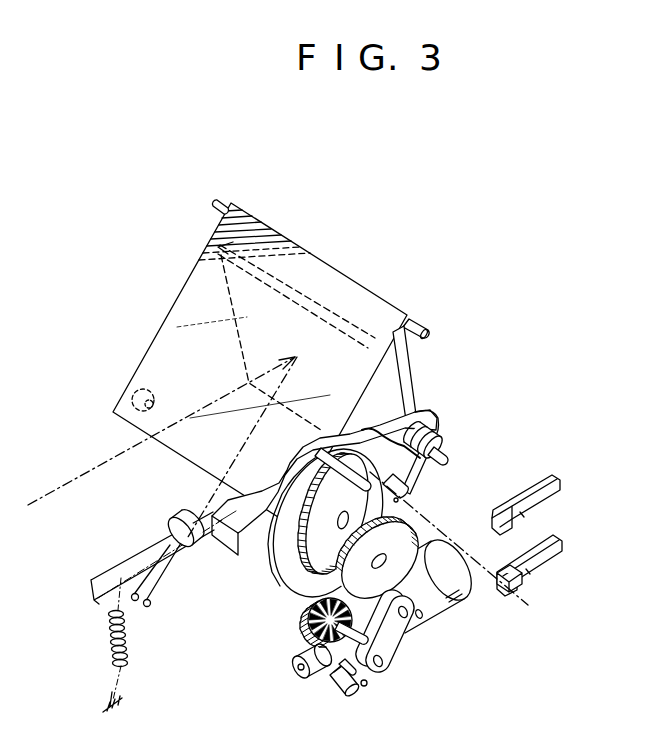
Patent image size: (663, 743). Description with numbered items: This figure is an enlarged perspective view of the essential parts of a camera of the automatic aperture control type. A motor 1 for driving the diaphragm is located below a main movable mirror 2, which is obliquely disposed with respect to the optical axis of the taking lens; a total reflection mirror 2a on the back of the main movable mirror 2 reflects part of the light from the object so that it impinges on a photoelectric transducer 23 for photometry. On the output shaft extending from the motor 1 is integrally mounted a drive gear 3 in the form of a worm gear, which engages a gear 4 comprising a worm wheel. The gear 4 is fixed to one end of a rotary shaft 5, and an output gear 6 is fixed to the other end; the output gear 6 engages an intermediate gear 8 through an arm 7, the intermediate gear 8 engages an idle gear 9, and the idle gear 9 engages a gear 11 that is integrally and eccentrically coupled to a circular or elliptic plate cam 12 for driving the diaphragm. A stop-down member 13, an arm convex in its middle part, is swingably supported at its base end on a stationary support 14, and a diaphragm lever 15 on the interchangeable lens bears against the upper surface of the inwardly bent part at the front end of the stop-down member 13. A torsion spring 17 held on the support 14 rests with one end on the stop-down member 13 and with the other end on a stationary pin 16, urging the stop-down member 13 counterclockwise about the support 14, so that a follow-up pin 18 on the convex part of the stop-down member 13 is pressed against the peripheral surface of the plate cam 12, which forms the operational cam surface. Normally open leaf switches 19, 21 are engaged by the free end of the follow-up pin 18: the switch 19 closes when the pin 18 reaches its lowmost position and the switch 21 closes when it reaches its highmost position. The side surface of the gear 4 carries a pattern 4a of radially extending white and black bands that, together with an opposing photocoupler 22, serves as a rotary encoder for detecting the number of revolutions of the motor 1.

The motor 1 is at (458, 590).
The main movable mirror 2 is at (325, 267).
The total reflection mirror 2a is at (399, 377).
The drive gear 3 is at (305, 671).
The gear 4 is at (301, 613).
The pattern 4a is at (300, 636).
The rotary shaft 5 is at (354, 677).
The output gear 6 is at (366, 685).
The arm 7 is at (388, 648).
The intermediate gear 8 is at (417, 616).
The idle gear 9 is at (406, 550).
The gear 11 is at (318, 557).
The plate cam 12 is at (278, 573).
The stop-down member 13 is at (432, 418).
The stationary support 14 is at (447, 459).
The diaphragm lever 15 is at (116, 566).
The stationary pin 16 is at (407, 497).
The torsion spring 17 is at (437, 440).
The follow-up pin 18 is at (349, 472).
The leaf switch 19 is at (537, 570).
The leaf switch 21 is at (520, 488).
The photocoupler 22 is at (346, 694).
The photoelectric transducer 23 is at (180, 518).